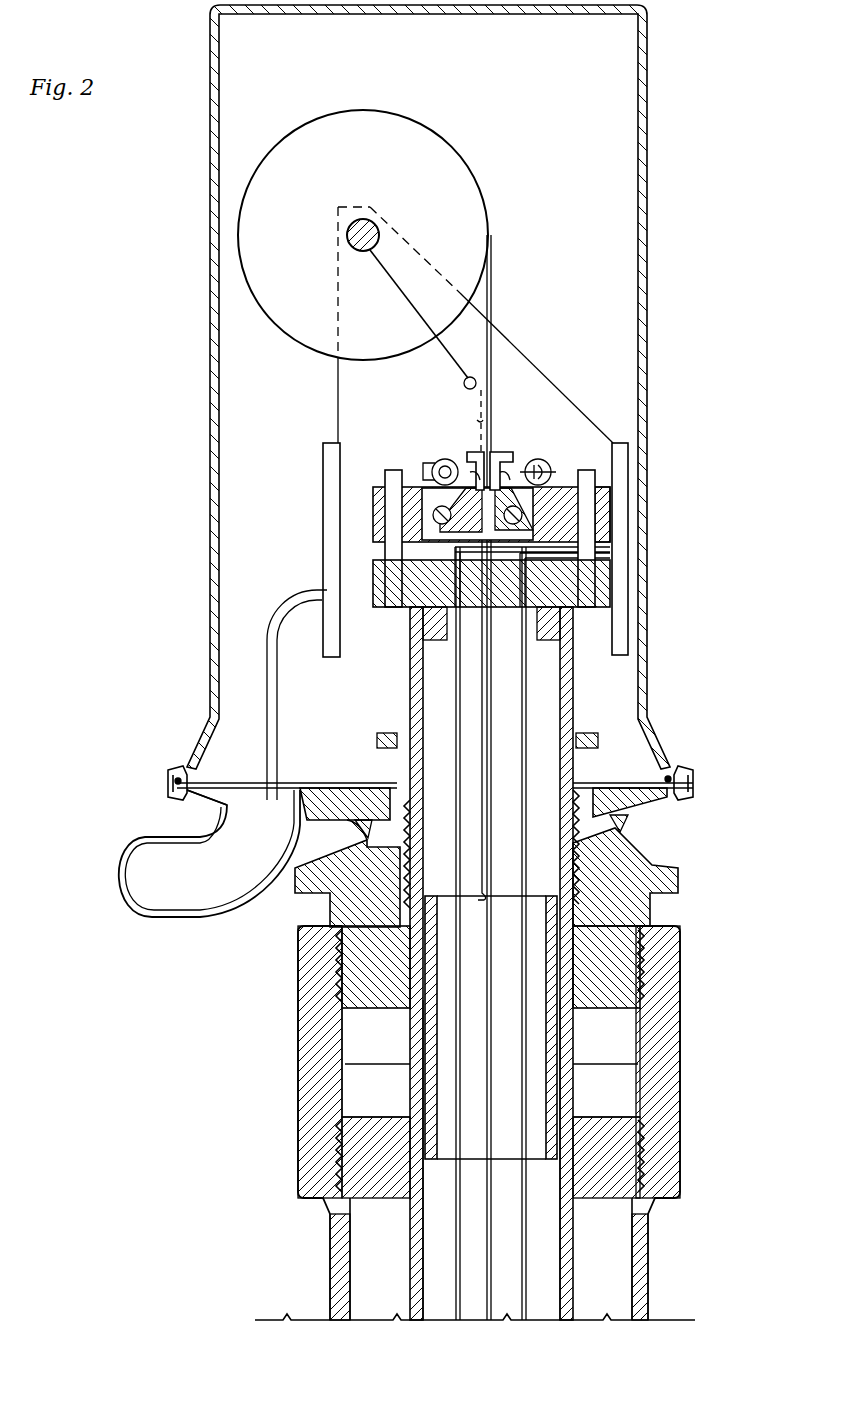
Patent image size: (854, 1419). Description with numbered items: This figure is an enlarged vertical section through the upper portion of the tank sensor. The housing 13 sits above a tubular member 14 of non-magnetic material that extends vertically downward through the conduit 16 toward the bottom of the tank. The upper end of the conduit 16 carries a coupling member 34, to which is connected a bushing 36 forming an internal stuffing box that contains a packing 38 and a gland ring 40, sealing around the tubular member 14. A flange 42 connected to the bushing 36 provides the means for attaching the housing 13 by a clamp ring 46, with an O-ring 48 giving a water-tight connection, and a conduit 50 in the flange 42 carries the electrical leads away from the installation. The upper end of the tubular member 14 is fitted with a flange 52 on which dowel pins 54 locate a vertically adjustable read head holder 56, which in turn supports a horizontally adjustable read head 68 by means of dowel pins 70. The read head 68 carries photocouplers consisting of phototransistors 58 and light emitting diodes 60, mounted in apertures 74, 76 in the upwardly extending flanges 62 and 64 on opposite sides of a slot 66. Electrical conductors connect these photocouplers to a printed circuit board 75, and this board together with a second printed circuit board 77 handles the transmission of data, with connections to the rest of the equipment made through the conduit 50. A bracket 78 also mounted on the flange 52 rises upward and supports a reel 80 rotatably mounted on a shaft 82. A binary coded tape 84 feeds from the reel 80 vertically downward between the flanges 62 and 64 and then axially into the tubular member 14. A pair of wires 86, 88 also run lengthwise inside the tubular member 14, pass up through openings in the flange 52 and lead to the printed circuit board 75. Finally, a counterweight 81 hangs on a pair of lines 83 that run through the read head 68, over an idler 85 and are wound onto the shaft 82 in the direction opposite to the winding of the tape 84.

The housing 13 is at (648, 222).
The tubular member 14 is at (576, 1243).
The conduit 16 is at (637, 1285).
The coupling member 34 is at (665, 1075).
The bushing 36 is at (630, 915).
The packing 38 is at (618, 862).
The gland ring 40 is at (585, 850).
The flange 42 is at (667, 793).
The clamp ring 46 is at (688, 778).
The O-ring 48 is at (178, 775).
The conduit 50 is at (135, 853).
The flange 52 is at (604, 592).
The dowel pins 54 is at (590, 480).
The read head holder 56 is at (604, 517).
The phototransistors 58 is at (550, 472).
The light emitting diodes 60 is at (438, 462).
The upwardly extending flange 62 is at (479, 420).
The upwardly extending flange 64 is at (505, 455).
The slot 66 is at (490, 455).
The read head 68 is at (598, 497).
The dowel pins 70 is at (435, 515).
The aperture 74 is at (470, 472).
The printed circuit board 75 is at (620, 624).
The aperture 76 is at (508, 470).
The printed circuit board 77 is at (330, 547).
The bracket 78 is at (338, 373).
The reel 80 is at (440, 152).
The counterweight 81 is at (550, 1045).
The shaft 82 is at (358, 222).
The lines 83 is at (393, 293).
The binary coded tape 84 is at (493, 292).
The idler 85 is at (463, 383).
The wire 86 is at (458, 710).
The wire 88 is at (528, 702).